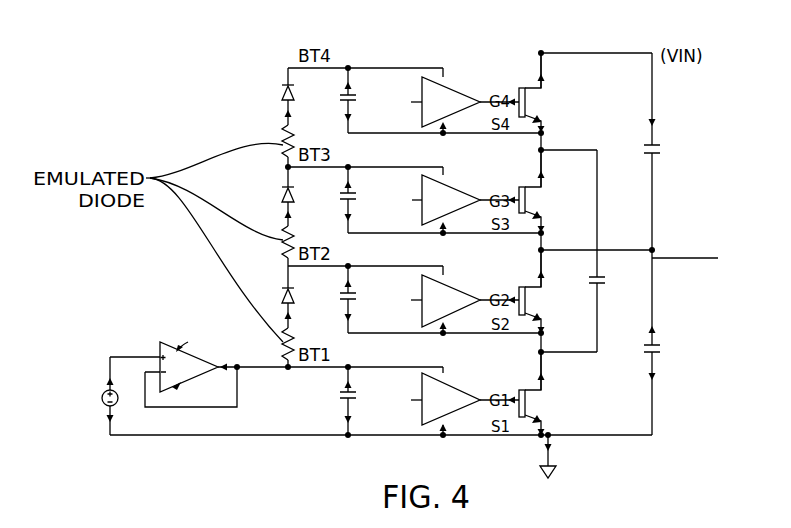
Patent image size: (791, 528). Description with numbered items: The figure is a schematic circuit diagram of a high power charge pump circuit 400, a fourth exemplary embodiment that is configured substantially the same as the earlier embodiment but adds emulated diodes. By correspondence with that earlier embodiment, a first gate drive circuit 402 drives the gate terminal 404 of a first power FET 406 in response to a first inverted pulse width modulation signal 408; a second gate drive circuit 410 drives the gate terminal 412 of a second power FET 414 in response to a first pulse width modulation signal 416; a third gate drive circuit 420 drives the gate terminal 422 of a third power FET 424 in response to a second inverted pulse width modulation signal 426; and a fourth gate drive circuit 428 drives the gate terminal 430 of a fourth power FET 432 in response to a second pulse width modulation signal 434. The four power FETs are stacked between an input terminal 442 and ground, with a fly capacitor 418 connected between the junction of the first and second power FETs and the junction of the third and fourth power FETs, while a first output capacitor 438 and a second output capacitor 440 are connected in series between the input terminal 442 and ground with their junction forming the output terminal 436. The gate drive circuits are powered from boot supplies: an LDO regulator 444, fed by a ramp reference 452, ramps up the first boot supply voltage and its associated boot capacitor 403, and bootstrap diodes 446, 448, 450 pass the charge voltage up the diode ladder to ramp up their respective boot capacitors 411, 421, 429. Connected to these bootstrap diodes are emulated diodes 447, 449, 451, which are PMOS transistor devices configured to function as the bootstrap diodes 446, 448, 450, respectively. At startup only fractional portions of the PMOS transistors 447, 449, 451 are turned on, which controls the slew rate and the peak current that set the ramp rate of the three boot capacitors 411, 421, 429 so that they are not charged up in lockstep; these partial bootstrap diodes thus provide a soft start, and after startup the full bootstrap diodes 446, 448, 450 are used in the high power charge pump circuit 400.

The high power charge pump circuit 400 is at (650, 26).
The gate driver amplifier 402 is at (452, 392).
The boot capacitor 403 is at (352, 392).
The switch transistor 404 is at (518, 390).
The drain connection 406 is at (542, 382).
The ground rail / PWMN input 408 is at (392, 420).
The gate driver amplifier 410 is at (452, 292).
The boot capacitor 411 is at (352, 293).
The switch transistor 412 is at (518, 287).
The drain connection 414 is at (541, 282).
The PWM input 416 is at (388, 320).
The flying capacitor C1 418 is at (600, 285).
The gate driver amplifier 420 is at (452, 192).
The boot capacitor 421 is at (352, 193).
The switch transistor 422 is at (518, 187).
The drain connection 424 is at (541, 182).
The PWMN input 426 is at (388, 218).
The gate driver amplifier 428 is at (452, 92).
The boot capacitor 429 is at (352, 94).
The switch transistor 430 is at (518, 88).
The drain connection to VIN 432 is at (545, 80).
The PWM input 434 is at (388, 120).
The output node VOUT 436 is at (655, 259).
The capacitor C4 438 is at (656, 143).
The capacitor C3 440 is at (656, 340).
The input node VIN 442 is at (543, 51).
The LDO regulator 444 is at (158, 342).
The bootstrap diode 446 is at (284, 293).
The emulated diode 447 is at (291, 333).
The bootstrap diode 448 is at (284, 207).
The emulated diode 449 is at (291, 232).
The bootstrap diode 450 is at (285, 104).
The emulated diode 451 is at (291, 142).
The ramp reference source 452 is at (101, 404).